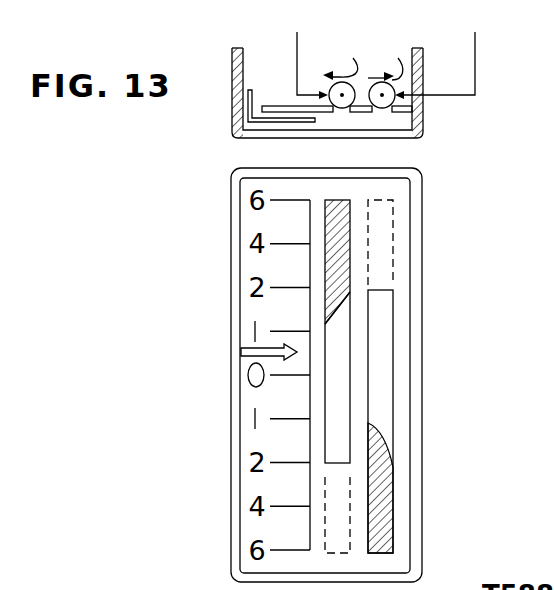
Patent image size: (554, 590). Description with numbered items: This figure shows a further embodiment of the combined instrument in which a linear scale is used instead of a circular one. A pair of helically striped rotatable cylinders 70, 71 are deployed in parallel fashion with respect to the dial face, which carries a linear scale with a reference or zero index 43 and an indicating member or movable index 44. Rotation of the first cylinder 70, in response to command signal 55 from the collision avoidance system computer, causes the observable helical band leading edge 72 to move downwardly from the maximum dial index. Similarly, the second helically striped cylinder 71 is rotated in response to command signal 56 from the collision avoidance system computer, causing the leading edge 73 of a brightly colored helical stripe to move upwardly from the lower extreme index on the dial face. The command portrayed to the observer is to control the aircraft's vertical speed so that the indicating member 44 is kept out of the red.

The zero index 43 is at (247, 370).
The movable index 44 is at (250, 352).
The command signal 55 is at (297, 56).
The command signal 56 is at (475, 57).
The helically striped rotatable cylinder 70 is at (328, 205).
The helically striped rotatable cylinder 71 is at (383, 225).
The helical band leading edge 72 is at (329, 313).
The leading edge of helical stripe 73 is at (380, 440).